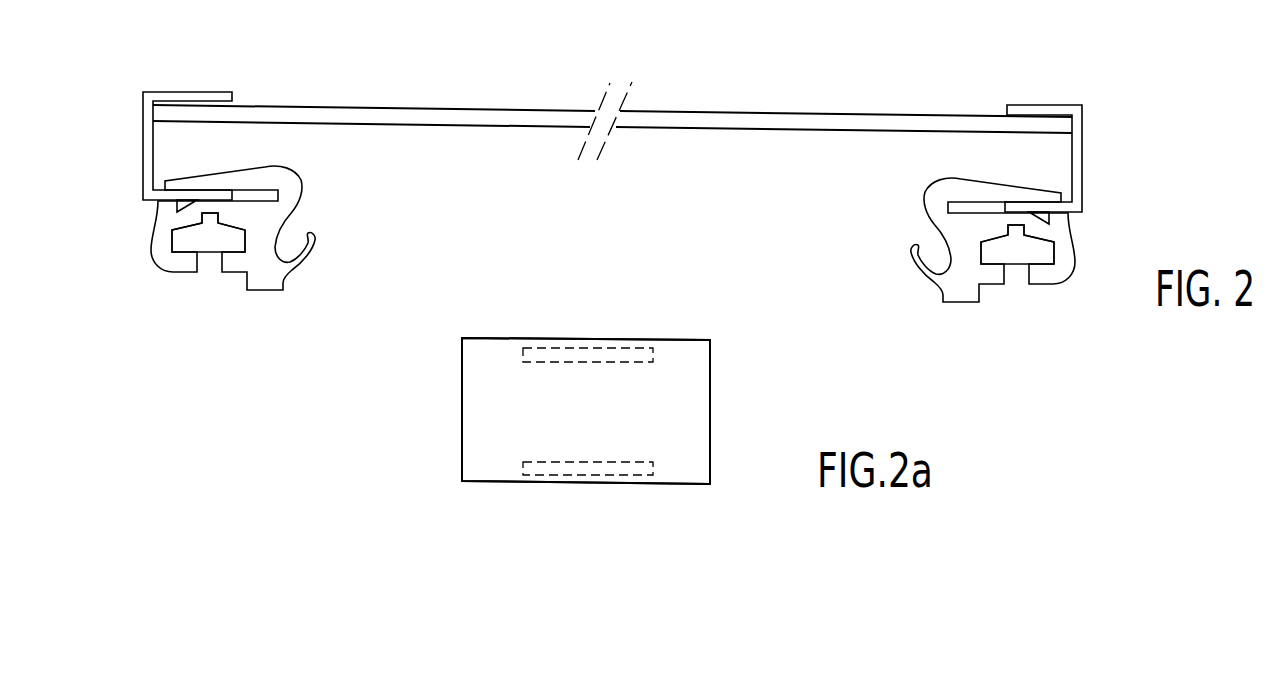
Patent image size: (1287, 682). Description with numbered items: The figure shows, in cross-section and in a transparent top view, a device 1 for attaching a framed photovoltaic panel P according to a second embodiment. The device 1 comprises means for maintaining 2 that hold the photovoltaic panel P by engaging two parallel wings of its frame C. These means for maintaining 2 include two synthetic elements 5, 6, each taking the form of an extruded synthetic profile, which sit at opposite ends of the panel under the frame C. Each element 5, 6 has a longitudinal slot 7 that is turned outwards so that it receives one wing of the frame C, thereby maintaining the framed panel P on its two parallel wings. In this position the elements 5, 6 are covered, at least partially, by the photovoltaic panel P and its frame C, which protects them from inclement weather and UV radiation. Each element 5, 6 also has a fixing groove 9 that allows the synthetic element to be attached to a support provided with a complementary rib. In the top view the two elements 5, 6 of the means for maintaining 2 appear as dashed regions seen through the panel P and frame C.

In FIG. 2, the device for attaching 1 is at (499, 92).
In FIG. 2, the photovoltaic panel P is at (689, 113).
In FIG. 2a, the photovoltaic panel P is at (684, 392).
In FIG. 2, the frame C is at (1076, 160).
In FIG. 2a, the frame C is at (712, 433).
In FIG. 2, the element 5 is at (312, 196).
In FIG. 2, the element 6 is at (913, 216).
In FIG. 2, the slot 7 is at (255, 193).
In FIG. 2, the fixing groove 9 is at (210, 240).
In FIG. 2a, the means for maintaining 2 is at (589, 347).